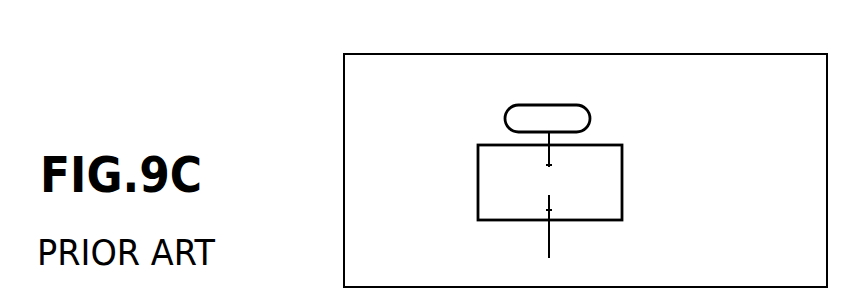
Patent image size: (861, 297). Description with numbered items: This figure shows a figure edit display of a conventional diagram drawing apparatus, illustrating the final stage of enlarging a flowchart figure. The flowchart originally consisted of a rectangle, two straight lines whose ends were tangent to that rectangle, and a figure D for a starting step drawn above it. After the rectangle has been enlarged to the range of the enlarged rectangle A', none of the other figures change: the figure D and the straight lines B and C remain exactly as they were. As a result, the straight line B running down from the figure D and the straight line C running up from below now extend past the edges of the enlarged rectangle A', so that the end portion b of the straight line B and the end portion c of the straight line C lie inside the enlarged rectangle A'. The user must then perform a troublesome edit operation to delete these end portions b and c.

The enlarged rectangle A' is at (635, 182).
The figure for a starting step D is at (549, 105).
The straight line B is at (550, 153).
The straight line C is at (549, 240).
The end portion of straight line B b is at (549, 165).
The end portion of straight line C c is at (549, 210).